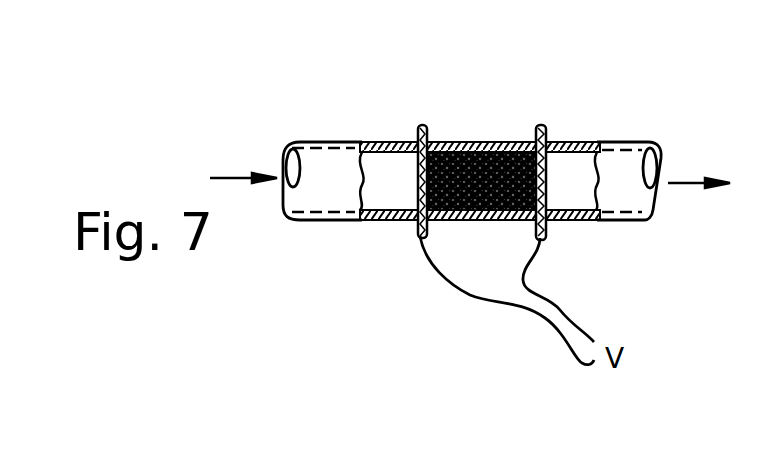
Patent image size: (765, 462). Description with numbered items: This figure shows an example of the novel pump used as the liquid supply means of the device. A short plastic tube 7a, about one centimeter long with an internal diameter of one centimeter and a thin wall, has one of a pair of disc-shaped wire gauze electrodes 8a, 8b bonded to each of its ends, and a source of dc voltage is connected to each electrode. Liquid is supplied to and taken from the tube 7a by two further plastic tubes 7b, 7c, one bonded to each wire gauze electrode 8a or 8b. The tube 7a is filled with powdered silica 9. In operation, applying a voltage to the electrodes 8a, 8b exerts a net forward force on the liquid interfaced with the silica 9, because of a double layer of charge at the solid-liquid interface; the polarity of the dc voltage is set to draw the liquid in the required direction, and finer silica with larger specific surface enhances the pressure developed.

The plastic tube 7a is at (478, 140).
The plastic tube 7b is at (348, 140).
The plastic tube 7c is at (615, 140).
The disc-shaped wire gauze electrode 8a is at (420, 130).
The disc-shaped wire gauze electrode 8b is at (540, 130).
The powdered silica 9 is at (467, 220).